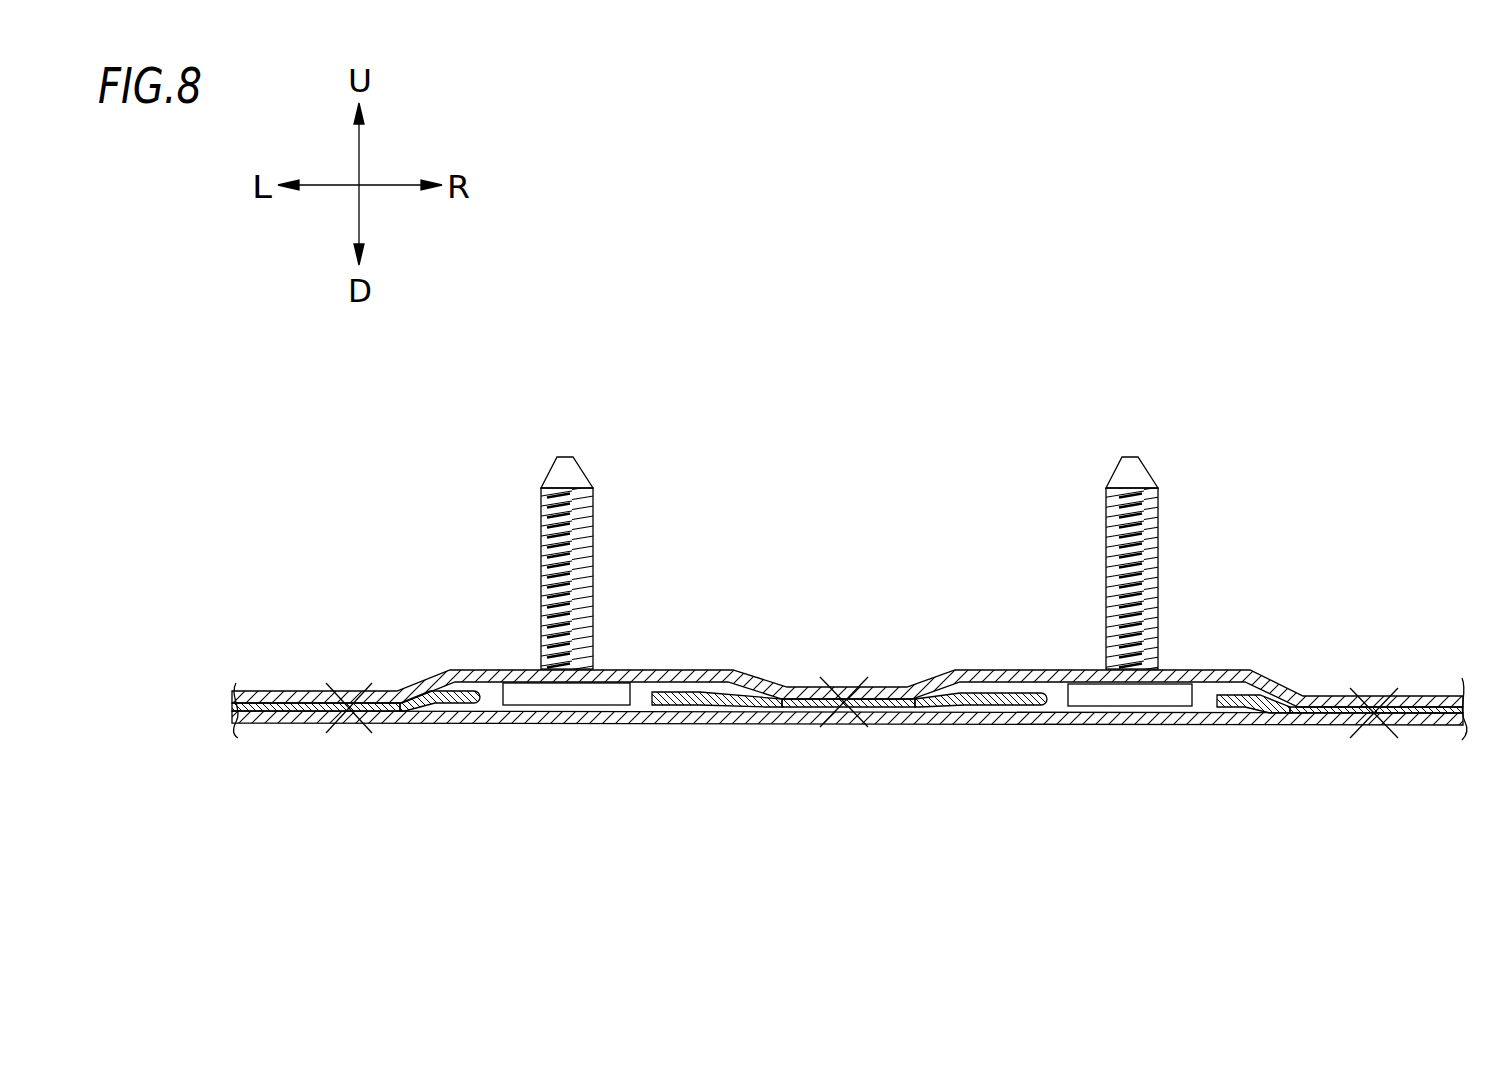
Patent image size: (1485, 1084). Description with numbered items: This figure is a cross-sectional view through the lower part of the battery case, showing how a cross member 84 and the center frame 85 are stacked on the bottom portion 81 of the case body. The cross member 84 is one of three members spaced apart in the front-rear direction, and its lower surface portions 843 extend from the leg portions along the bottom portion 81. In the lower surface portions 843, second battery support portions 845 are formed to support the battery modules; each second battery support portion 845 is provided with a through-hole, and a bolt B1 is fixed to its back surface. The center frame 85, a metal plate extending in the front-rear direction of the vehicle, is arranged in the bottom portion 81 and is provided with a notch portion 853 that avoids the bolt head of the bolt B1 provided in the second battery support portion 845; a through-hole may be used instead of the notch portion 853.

The cross member 84 is at (1412, 686).
The lower surface portion 843 is at (292, 690).
The second battery support portion 845 is at (695, 670).
The center frame 85 is at (668, 705).
The notch portion 853 is at (483, 699).
The bottom portion 81 is at (1217, 727).
The bolt B1 is at (594, 540).